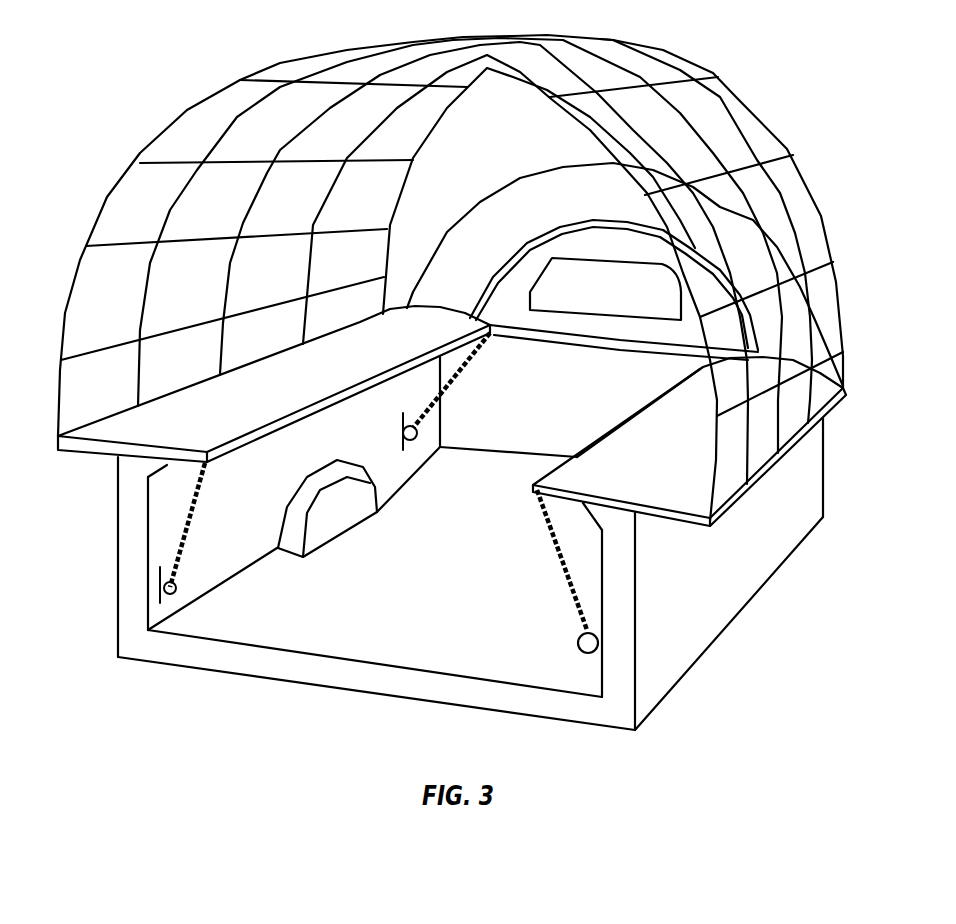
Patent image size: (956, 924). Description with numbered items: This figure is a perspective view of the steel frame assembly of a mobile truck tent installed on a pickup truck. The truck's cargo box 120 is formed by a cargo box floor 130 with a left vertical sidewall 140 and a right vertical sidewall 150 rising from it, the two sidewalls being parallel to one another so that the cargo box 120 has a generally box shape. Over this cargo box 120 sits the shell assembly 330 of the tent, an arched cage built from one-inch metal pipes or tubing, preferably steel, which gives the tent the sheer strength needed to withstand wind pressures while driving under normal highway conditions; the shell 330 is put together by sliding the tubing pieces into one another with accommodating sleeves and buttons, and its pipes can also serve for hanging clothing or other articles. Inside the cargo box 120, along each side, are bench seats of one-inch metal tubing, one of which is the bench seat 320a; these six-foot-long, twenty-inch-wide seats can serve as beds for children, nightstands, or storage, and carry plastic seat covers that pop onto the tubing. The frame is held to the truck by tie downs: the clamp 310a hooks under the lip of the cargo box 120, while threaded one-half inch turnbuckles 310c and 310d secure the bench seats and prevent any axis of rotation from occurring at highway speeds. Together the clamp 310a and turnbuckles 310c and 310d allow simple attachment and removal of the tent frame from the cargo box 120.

The shell assembly 330 is at (128, 57).
The bench seat 320a is at (227, 404).
The clamp 310a is at (455, 378).
The turnbuckle 310c is at (198, 525).
The turnbuckle 310d is at (563, 578).
The right vertical sidewall 150 is at (178, 525).
The cargo box floor 130 is at (448, 532).
The left vertical sidewall 140 is at (737, 577).
The cargo box 120 is at (698, 664).